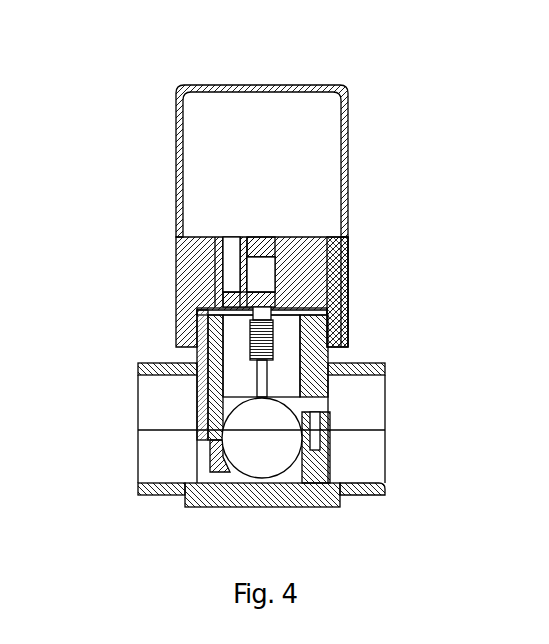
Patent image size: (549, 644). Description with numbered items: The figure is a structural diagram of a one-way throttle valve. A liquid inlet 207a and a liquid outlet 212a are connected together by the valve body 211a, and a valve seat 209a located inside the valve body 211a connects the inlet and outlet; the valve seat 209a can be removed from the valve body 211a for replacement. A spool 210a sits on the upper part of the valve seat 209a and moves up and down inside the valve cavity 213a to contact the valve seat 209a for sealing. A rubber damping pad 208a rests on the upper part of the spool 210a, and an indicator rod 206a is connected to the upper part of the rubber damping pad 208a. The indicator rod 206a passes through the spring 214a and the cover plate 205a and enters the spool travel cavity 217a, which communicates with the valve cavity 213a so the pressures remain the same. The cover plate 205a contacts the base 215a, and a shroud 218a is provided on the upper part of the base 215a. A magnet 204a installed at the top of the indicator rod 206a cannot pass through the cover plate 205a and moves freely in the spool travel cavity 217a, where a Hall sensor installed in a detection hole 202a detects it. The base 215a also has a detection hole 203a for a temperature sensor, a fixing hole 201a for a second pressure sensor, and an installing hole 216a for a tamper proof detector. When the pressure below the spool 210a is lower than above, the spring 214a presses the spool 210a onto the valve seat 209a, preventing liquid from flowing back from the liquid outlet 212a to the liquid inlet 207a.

The fixing hole 201a is at (170, 203).
The detection hole 202a is at (153, 243).
The detection hole 203a is at (207, 287).
The magnet 204a is at (170, 283).
The cover plate 205a is at (196, 300).
The indicator rod 206a is at (168, 316).
The liquid inlet 207a is at (131, 413).
The rubber damping pad 208a is at (144, 375).
The valve seat 209a is at (148, 457).
The spool 210a is at (239, 473).
The valve body 211a is at (262, 515).
The liquid outlet 212a is at (391, 421).
The valve cavity 213a is at (372, 356).
The spring 214a is at (352, 351).
The base 215a is at (393, 292).
The installing hole 216a is at (398, 292).
The spool travel cavity 217a is at (351, 254).
The shroud 218a is at (315, 161).